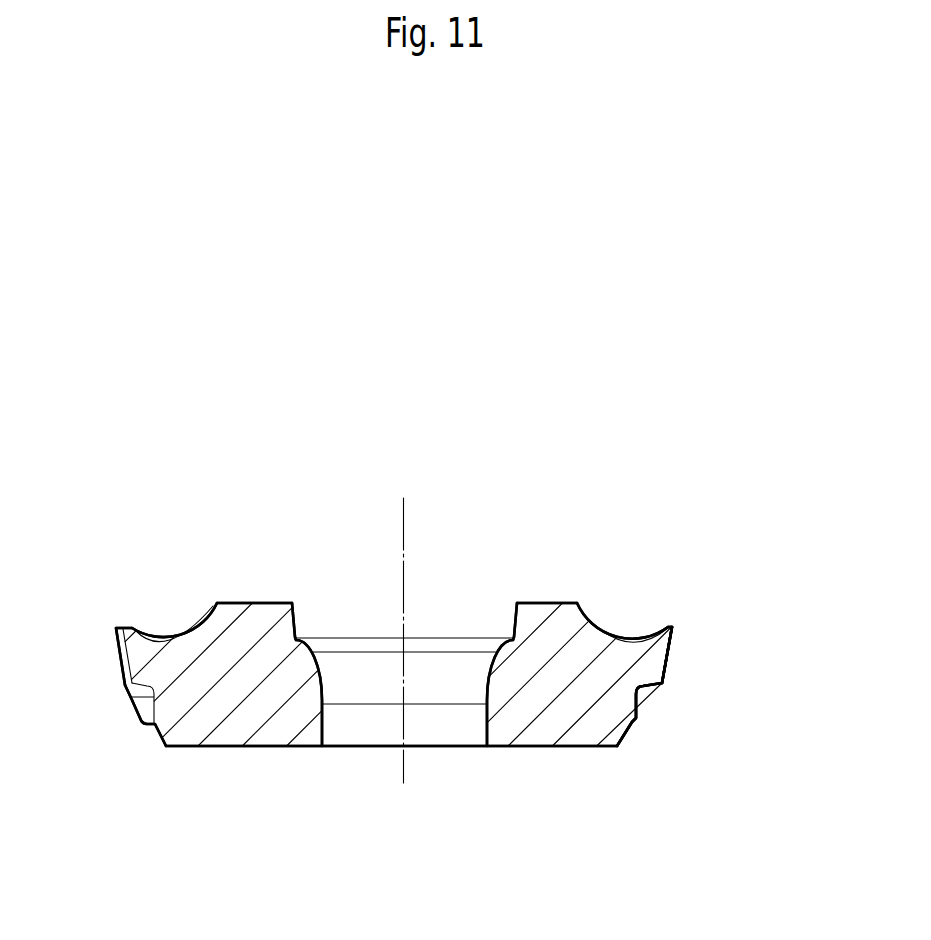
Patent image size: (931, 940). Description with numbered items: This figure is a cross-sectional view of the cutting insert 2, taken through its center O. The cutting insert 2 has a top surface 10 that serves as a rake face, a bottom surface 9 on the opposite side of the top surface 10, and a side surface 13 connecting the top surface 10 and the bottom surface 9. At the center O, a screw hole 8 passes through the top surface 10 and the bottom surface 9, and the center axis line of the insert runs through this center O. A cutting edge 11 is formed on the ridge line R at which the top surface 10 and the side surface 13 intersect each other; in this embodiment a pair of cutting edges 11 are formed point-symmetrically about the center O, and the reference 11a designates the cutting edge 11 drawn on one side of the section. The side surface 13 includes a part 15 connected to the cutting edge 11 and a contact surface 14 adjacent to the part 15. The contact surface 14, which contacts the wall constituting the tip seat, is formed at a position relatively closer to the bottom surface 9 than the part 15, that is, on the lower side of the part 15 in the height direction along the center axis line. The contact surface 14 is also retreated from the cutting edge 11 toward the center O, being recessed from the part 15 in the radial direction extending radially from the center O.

The cutting insert 2 is at (313, 598).
The screw hole 8 is at (497, 665).
The bottom surface 9 is at (571, 747).
The top surface 10 is at (567, 603).
The cutting edge 11 is at (624, 643).
The flange surface 11a is at (675, 627).
The side surface 13 is at (795, 625).
The contact surface 14 is at (143, 708).
The part 15 is at (125, 658).
The center O is at (406, 620).
The ridge line R is at (116, 628).